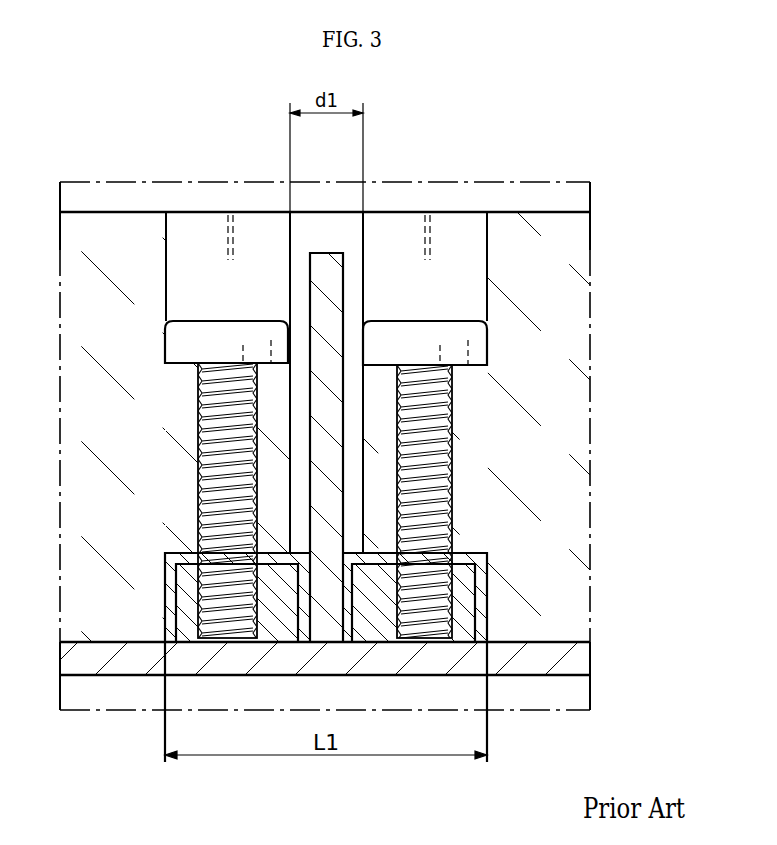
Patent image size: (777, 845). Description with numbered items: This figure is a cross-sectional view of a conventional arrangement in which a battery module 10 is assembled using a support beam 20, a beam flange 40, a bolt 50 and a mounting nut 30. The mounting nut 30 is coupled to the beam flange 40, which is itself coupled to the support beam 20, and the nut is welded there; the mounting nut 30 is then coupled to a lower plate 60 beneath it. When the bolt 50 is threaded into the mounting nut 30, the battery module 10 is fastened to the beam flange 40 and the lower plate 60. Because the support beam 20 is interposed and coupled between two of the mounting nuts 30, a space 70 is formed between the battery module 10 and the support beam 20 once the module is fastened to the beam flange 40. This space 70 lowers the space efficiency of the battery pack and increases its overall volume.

The battery module 10 is at (130, 243).
The support beam 20 is at (327, 267).
The mounting nut 30 is at (458, 620).
The beam flange 40 is at (480, 584).
The bolt 50 is at (452, 455).
The lower plate 60 is at (567, 658).
The space 70 is at (302, 285).